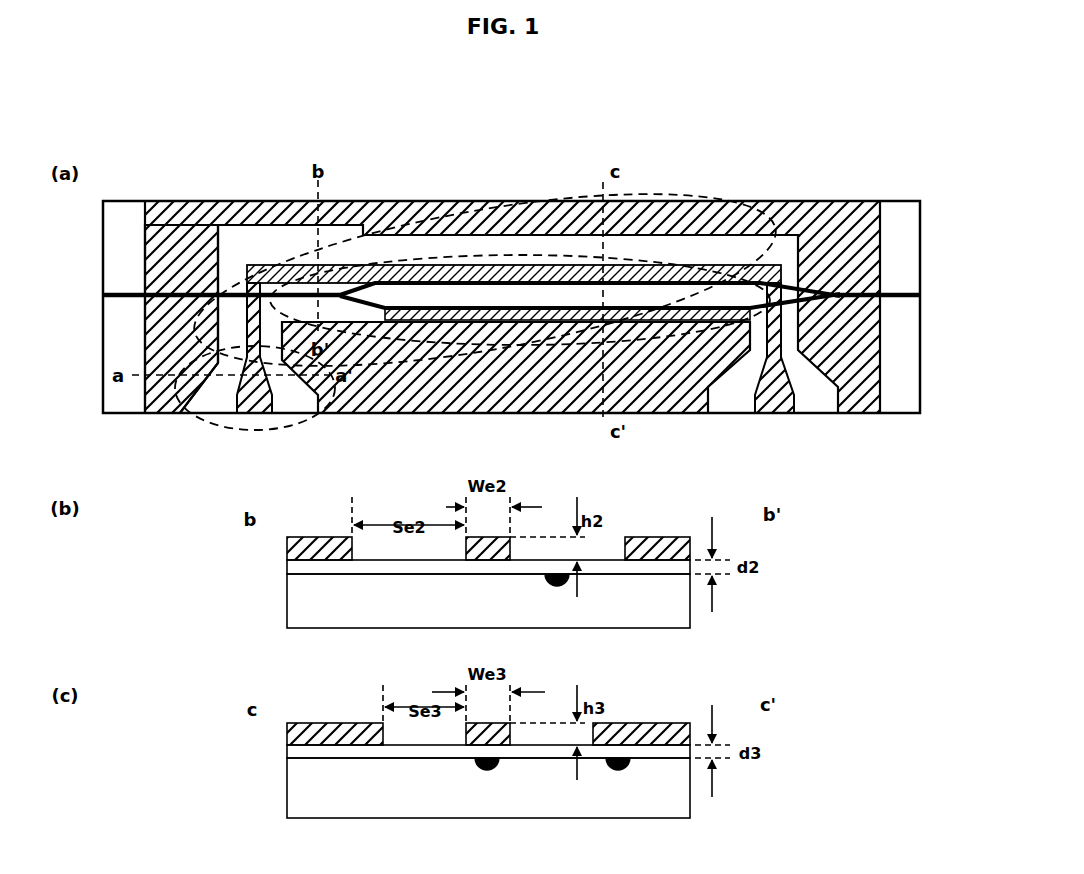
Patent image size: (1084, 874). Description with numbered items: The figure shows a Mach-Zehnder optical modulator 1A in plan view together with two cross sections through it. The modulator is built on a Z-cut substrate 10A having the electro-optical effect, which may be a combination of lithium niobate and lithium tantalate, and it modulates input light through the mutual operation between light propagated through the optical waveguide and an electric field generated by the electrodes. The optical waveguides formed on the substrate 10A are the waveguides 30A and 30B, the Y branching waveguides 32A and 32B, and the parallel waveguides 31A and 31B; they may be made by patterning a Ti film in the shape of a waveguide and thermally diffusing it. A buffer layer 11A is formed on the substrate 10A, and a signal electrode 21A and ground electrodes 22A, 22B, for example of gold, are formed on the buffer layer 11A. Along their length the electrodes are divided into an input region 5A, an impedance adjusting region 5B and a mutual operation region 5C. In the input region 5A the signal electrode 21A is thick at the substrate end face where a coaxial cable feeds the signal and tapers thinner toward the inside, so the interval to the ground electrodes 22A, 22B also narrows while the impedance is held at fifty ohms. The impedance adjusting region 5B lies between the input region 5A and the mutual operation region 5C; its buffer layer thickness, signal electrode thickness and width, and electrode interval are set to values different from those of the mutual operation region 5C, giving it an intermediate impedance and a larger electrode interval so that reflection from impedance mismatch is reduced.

The Mach-Zehnder optical modulator 1A is at (897, 414).
The input region 5A is at (256, 428).
The impedance adjusting region 5B is at (240, 238).
The mutual operation region 5C is at (762, 252).
The Z-cut substrate 10A is at (287, 600).
The buffer layer 11A is at (287, 567).
The signal electrode 21A is at (240, 415).
The ground electrode 22A is at (167, 414).
The ground electrode 22B is at (388, 414).
The waveguide 30A is at (125, 293).
The waveguide 30B is at (905, 292).
The parallel waveguide 31A is at (478, 283).
The parallel waveguide 31B is at (522, 308).
The Y branching waveguide 32A is at (355, 266).
The Y branching waveguide 32B is at (800, 280).